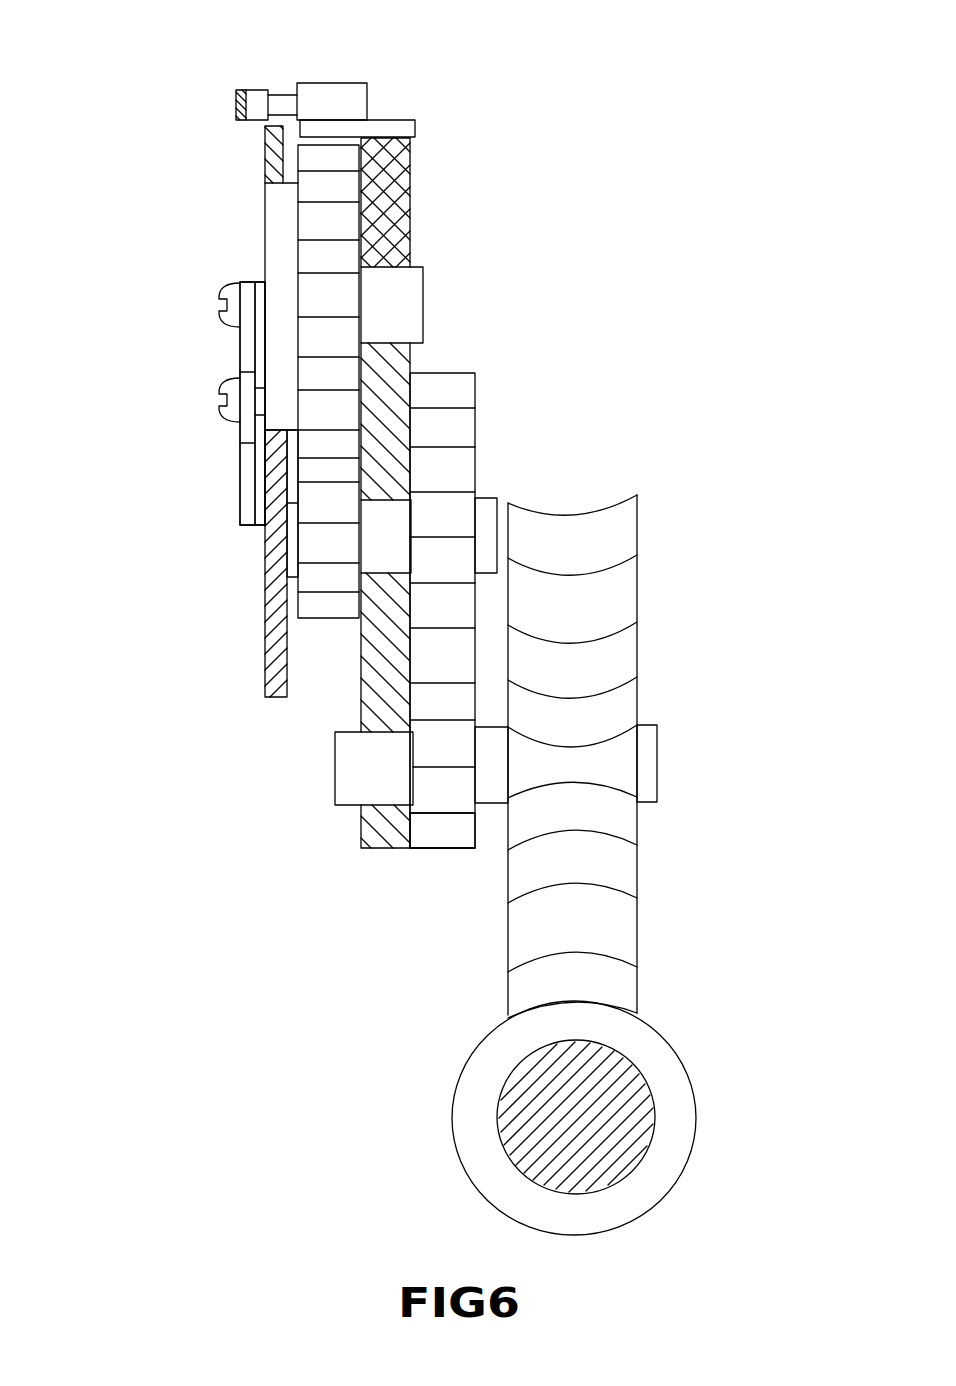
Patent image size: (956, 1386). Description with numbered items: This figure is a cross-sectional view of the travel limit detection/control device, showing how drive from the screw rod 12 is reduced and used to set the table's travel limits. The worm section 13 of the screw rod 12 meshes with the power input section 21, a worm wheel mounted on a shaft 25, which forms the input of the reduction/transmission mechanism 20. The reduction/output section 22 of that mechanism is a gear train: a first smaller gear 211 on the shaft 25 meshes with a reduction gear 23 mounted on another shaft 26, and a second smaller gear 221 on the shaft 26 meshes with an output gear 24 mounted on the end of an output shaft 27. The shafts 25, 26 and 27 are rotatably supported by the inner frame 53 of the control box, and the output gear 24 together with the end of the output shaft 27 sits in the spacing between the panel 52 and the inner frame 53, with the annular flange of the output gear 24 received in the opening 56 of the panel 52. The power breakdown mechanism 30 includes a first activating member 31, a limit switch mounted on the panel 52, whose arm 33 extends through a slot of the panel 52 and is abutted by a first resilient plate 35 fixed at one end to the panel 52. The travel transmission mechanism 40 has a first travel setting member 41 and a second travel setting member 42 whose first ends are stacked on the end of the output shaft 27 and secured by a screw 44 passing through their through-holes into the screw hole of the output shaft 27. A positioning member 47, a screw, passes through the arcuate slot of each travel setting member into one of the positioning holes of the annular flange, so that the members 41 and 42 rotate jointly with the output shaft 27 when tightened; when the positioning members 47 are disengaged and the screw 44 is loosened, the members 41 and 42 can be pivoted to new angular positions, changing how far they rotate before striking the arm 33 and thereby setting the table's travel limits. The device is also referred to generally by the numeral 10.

The hinge assembly 10 is at (675, 1018).
The screw rod 12 is at (630, 1107).
The worm section 13 is at (650, 1017).
The reduction/transmission mechanism 20 is at (336, 848).
The power input section 21 is at (612, 672).
The first smaller gear 211 is at (455, 840).
The reduction/output section 22 is at (497, 408).
The second smaller gear 221 is at (322, 572).
The reduction gear 23 is at (460, 470).
The output gear 24 is at (328, 225).
The shaft 25 is at (345, 775).
The shaft 26 is at (485, 527).
The output shaft 27 is at (412, 307).
The power breakdown mechanism 30 is at (302, 76).
The first activating member 31 is at (358, 88).
The arm 33 is at (283, 98).
The first resilient plate 35 is at (237, 102).
The travel transmission mechanism 40 is at (236, 464).
The first travel setting member 41 is at (247, 480).
The second travel setting member 42 is at (260, 507).
The screw 44 is at (224, 312).
The positioning member 47 is at (224, 403).
The panel 52 is at (278, 550).
The inner frame 53 is at (393, 222).
The opening 56 is at (263, 190).